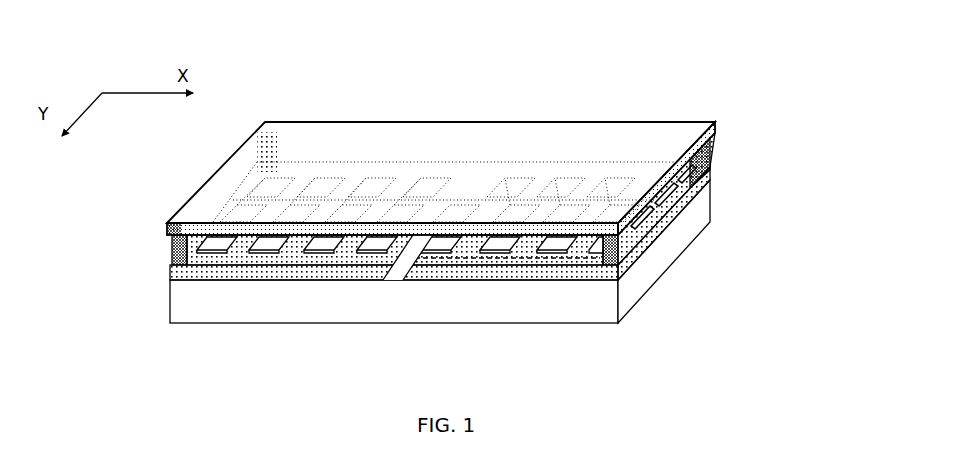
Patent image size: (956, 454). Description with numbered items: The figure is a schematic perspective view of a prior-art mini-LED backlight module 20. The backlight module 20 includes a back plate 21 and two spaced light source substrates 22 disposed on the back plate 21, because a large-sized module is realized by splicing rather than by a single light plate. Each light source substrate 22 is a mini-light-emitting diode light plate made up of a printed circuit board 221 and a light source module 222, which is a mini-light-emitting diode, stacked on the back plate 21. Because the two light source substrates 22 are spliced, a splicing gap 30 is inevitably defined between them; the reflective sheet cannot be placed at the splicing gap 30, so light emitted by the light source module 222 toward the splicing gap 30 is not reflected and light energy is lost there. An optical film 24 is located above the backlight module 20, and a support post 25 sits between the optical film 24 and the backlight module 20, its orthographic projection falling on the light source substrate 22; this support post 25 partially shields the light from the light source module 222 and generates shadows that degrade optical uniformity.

The backlight module 20 is at (285, 47).
The back plate 21 is at (628, 288).
The light source substrate 22 is at (519, 199).
The printed circuit board 221 is at (708, 223).
The light source module 222 is at (692, 180).
The optical film 24 is at (713, 143).
The support post 25 is at (624, 263).
The splicing gap 30 is at (394, 281).